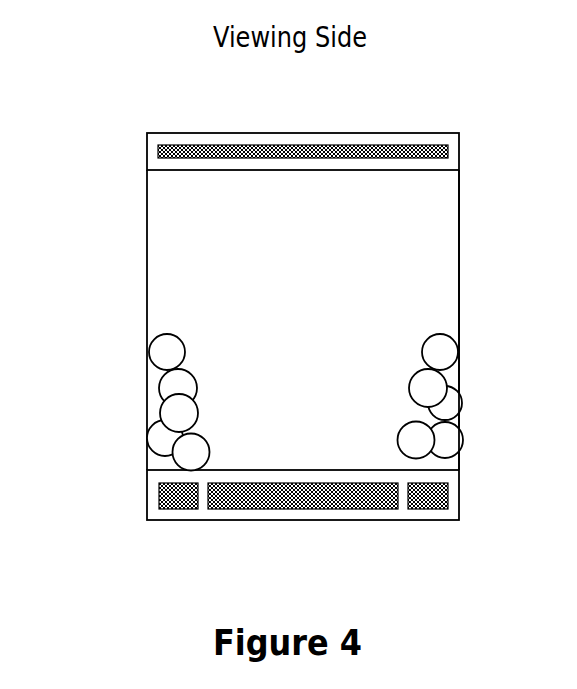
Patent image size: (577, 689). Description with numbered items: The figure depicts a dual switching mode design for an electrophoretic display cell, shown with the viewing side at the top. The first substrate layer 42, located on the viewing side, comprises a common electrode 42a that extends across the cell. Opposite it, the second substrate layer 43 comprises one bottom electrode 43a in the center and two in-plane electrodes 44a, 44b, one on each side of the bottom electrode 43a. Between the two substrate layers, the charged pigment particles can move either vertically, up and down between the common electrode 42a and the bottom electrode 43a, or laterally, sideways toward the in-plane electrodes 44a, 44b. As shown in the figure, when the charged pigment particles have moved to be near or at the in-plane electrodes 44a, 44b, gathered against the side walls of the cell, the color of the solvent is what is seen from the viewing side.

The first substrate layer 42 is at (461, 146).
The common electrode 42a is at (309, 145).
The second substrate layer 43 is at (146, 495).
The bottom electrode 43a is at (309, 497).
The in-plane electrode 44a is at (184, 509).
The in-plane electrode 44b is at (434, 509).